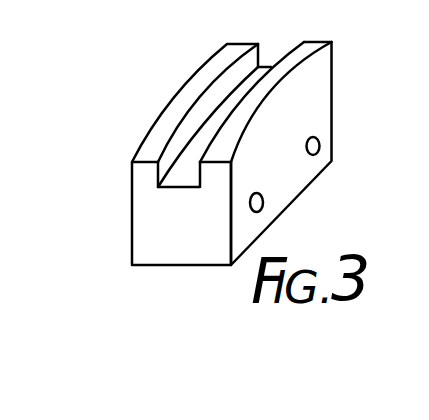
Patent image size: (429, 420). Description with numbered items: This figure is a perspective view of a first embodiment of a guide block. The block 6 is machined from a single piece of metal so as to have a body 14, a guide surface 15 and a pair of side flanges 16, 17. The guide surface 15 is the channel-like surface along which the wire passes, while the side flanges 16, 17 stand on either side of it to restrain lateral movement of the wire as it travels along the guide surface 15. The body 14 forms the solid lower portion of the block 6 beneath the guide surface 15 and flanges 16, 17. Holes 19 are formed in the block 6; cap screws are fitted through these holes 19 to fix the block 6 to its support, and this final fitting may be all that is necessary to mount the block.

The block 6 is at (333, 96).
The body 14 is at (143, 233).
The guide surface 15 is at (263, 68).
The side flange 16 is at (213, 57).
The side flange 17 is at (317, 47).
The holes 19 is at (264, 204).